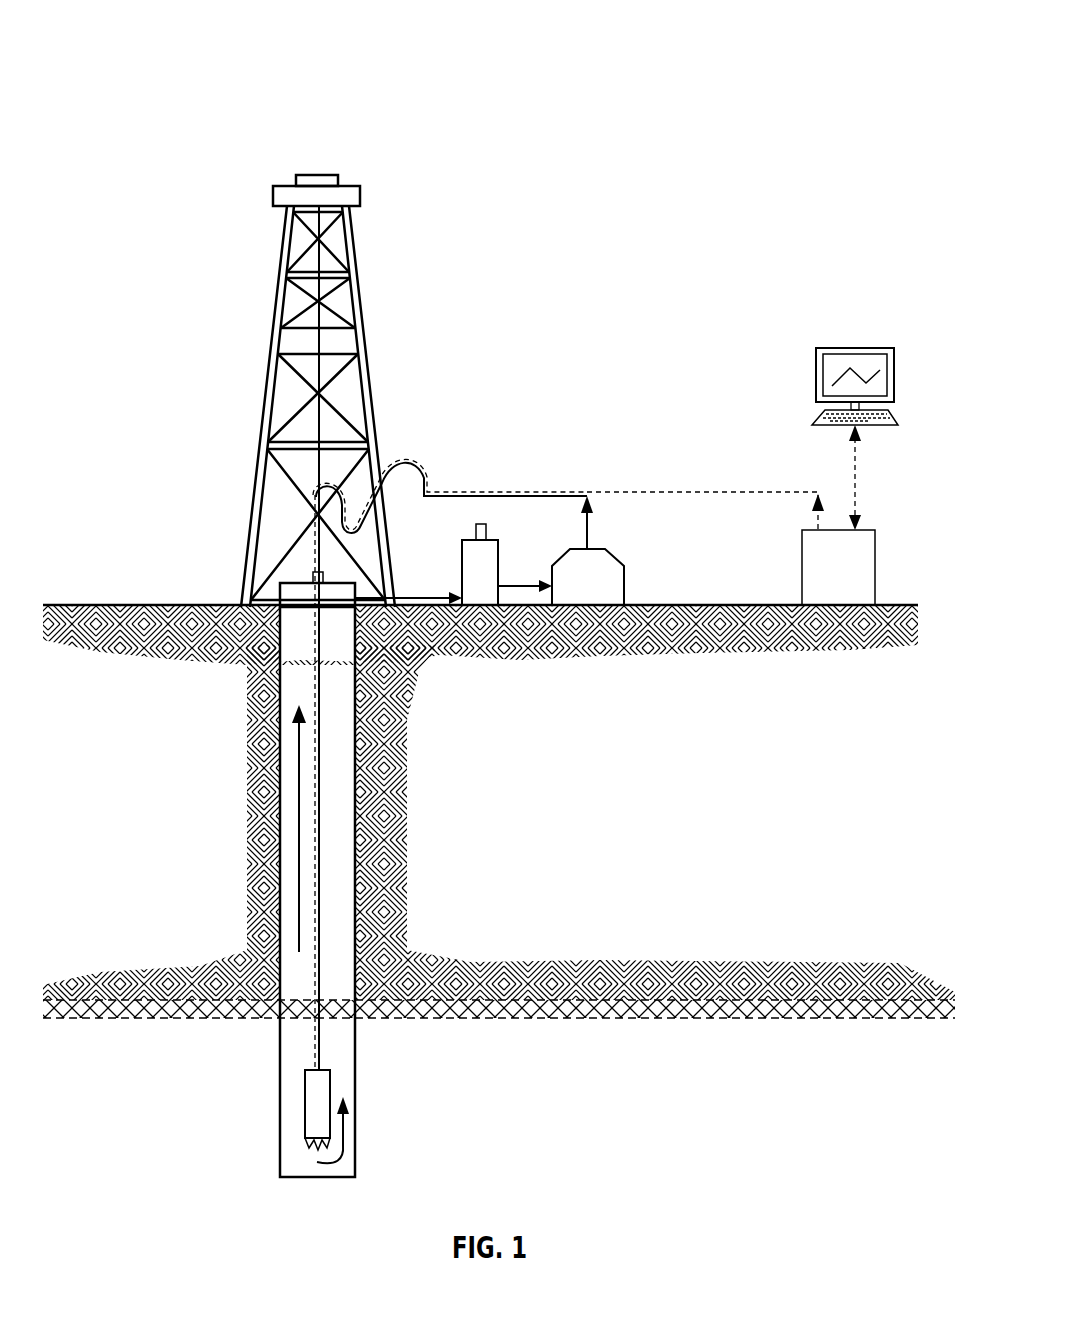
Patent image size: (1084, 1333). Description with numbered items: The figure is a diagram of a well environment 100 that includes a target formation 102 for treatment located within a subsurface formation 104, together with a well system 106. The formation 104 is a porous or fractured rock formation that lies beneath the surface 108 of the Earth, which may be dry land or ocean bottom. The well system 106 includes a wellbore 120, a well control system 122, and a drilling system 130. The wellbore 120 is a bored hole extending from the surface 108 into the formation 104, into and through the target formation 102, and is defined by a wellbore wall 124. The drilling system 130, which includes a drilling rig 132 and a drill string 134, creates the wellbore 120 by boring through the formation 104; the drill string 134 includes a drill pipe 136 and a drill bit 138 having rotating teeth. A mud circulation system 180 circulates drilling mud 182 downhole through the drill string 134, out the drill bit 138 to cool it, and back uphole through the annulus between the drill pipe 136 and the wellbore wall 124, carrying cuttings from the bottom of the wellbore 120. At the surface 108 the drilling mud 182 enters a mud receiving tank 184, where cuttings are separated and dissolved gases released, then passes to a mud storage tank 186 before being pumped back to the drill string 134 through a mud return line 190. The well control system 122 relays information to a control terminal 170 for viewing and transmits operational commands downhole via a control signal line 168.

The well environment 100 is at (140, 32).
The target formation 102 is at (937, 949).
The subsurface formation 104 is at (712, 802).
The well system 106 is at (135, 138).
The surface 108 is at (97, 605).
The wellbore 120 is at (297, 973).
The well control system 122 is at (858, 568).
The wellbore wall 124 is at (357, 848).
The drilling system 130 is at (238, 287).
The drilling rig 132 is at (263, 400).
The drill string 134 is at (305, 1092).
The drill pipe 136 is at (320, 762).
The drill bit 138 is at (305, 1142).
The control signal line 168 is at (745, 492).
The control terminal 170 is at (857, 348).
The mud circulation system 180 is at (627, 348).
The drilling mud 182 is at (300, 750).
The mud receiving tank 184 is at (485, 587).
The mud storage tank 186 is at (603, 587).
The mud return line 190 is at (486, 492).